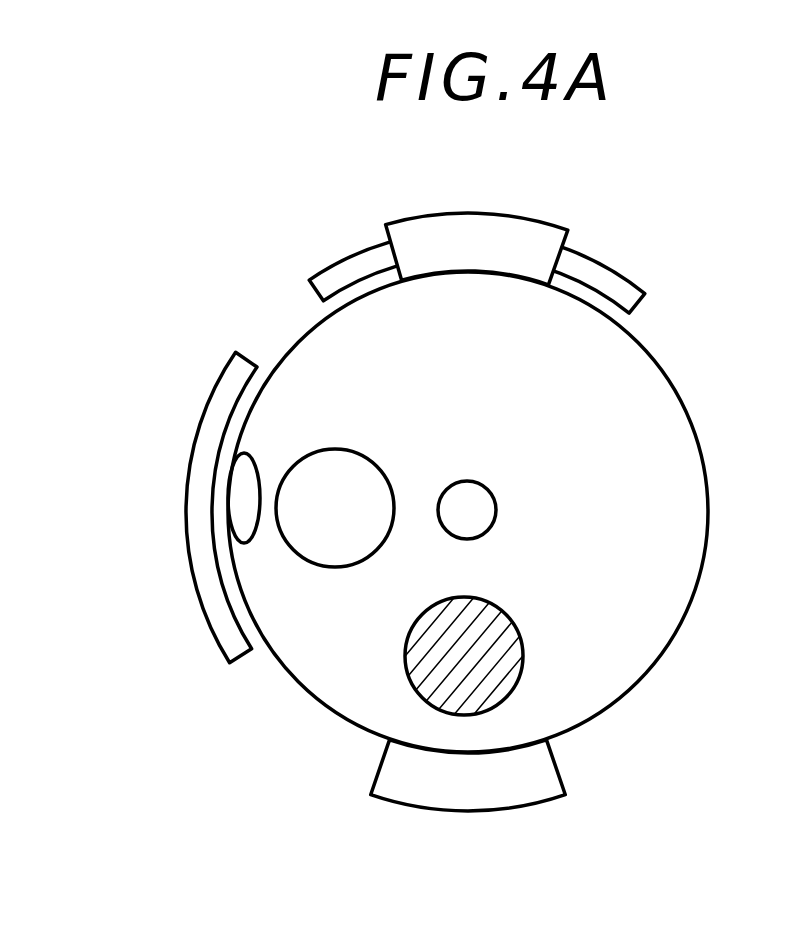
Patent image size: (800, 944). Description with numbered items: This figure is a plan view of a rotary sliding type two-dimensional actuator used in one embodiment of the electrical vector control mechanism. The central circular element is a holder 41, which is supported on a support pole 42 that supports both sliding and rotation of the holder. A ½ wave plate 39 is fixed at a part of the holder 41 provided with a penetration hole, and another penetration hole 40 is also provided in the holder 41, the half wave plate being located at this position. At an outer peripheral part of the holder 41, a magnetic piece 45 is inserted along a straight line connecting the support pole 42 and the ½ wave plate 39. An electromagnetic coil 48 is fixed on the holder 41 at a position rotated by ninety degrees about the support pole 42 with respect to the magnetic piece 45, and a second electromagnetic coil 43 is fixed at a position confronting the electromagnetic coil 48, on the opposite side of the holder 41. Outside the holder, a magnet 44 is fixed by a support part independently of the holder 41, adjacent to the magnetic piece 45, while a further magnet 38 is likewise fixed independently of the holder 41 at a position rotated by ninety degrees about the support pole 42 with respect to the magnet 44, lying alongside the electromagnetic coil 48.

The magnet 38 is at (605, 262).
The ½ wave plate 39 is at (313, 565).
The penetration hole 40 is at (517, 685).
The holder 41 is at (653, 667).
The support pole 42 is at (495, 502).
The electromagnetic coil 43 is at (388, 802).
The magnet 44 is at (203, 610).
The magnetic piece 45 is at (253, 455).
The electromagnetic coil 48 is at (497, 213).